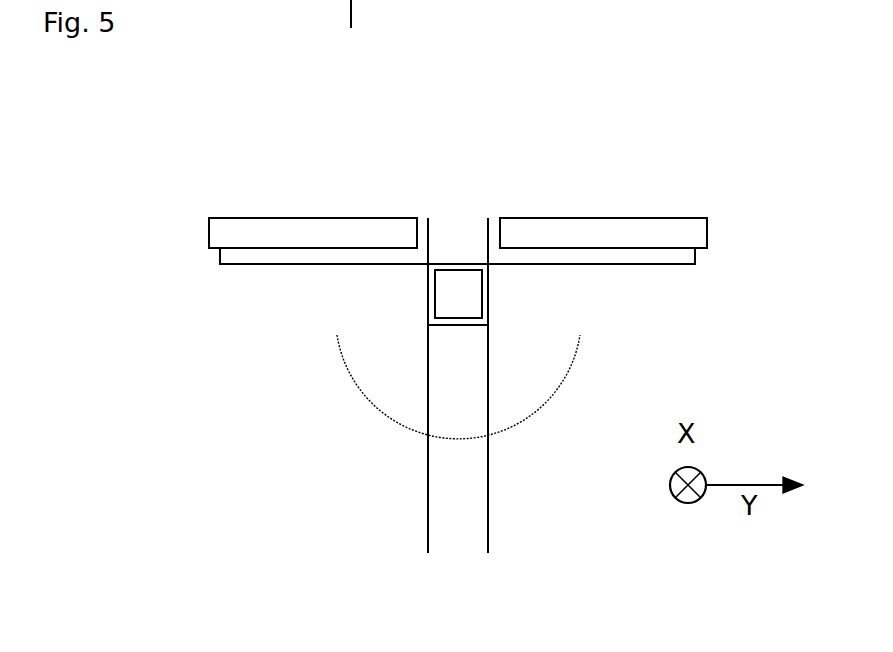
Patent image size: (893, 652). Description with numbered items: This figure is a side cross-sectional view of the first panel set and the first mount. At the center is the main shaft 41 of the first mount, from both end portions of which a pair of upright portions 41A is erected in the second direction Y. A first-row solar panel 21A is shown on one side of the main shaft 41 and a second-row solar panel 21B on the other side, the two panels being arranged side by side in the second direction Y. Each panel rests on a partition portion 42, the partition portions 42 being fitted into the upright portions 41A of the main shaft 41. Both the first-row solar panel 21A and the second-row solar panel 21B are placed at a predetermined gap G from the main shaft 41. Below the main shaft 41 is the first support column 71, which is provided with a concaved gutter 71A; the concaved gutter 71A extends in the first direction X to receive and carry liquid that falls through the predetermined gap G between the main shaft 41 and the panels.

The first-row solar panel 21A is at (245, 219).
The second-row solar panel 21B is at (670, 218).
The partition portion 42 is at (250, 267).
The main shaft 41 is at (490, 308).
The upright portion 41A is at (428, 232).
The first support column 71 is at (473, 512).
The concaved gutter 71A is at (560, 397).
The predetermined gap G is at (496, 218).